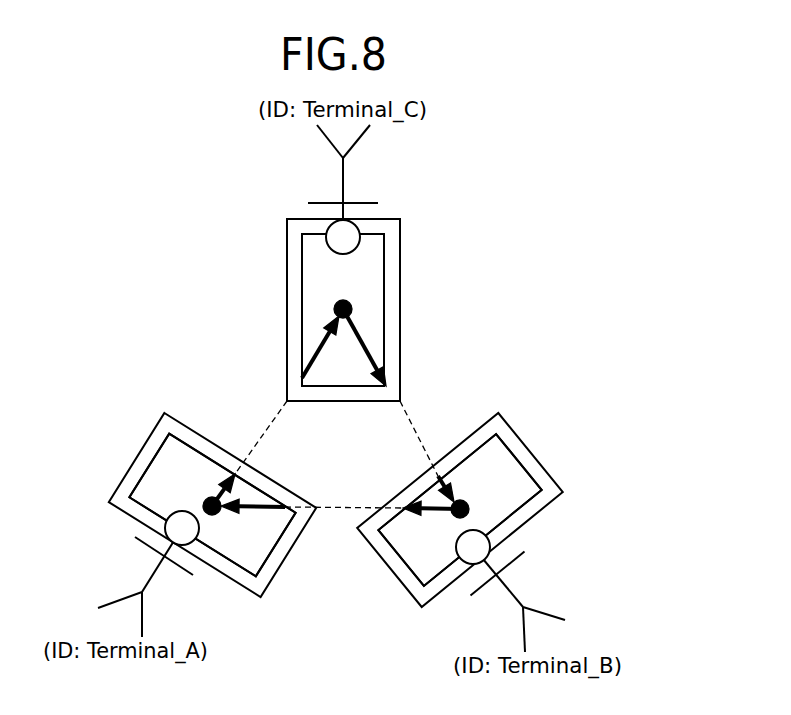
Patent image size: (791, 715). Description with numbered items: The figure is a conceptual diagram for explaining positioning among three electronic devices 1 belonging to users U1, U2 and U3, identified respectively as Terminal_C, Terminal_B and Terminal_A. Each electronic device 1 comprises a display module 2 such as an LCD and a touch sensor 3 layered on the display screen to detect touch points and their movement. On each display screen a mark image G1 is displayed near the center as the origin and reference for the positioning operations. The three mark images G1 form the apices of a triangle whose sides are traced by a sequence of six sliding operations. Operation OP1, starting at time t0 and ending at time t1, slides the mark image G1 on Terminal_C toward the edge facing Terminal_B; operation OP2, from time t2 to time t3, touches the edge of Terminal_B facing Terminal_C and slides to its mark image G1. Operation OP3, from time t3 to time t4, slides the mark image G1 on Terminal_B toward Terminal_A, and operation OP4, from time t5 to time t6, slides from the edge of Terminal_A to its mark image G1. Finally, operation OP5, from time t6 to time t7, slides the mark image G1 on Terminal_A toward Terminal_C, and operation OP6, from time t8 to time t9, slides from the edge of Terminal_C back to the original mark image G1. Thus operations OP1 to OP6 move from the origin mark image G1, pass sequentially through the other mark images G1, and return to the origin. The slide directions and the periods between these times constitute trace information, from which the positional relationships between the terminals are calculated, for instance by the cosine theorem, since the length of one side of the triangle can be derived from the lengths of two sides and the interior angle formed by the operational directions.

The electronic device 1 is at (400, 297).
The display module 2 is at (377, 252).
The touch sensor 3 is at (377, 278).
The mark image G1 is at (335, 307).
The user U1 is at (328, 145).
The user U2 is at (508, 592).
The user U3 is at (148, 582).
The operation OP1 is at (353, 335).
The operation OP2 is at (450, 478).
The operation OP3 is at (433, 513).
The operation OP4 is at (252, 510).
The operation OP5 is at (230, 500).
The operation OP6 is at (312, 345).
The time t0 is at (346, 288).
The time t1 is at (361, 375).
The time t2 is at (469, 478).
The time t3 is at (486, 510).
The time t4 is at (406, 528).
The time t5 is at (276, 523).
The time t6 is at (218, 528).
The time t7 is at (208, 476).
The time t8 is at (321, 375).
The time t9 is at (318, 315).